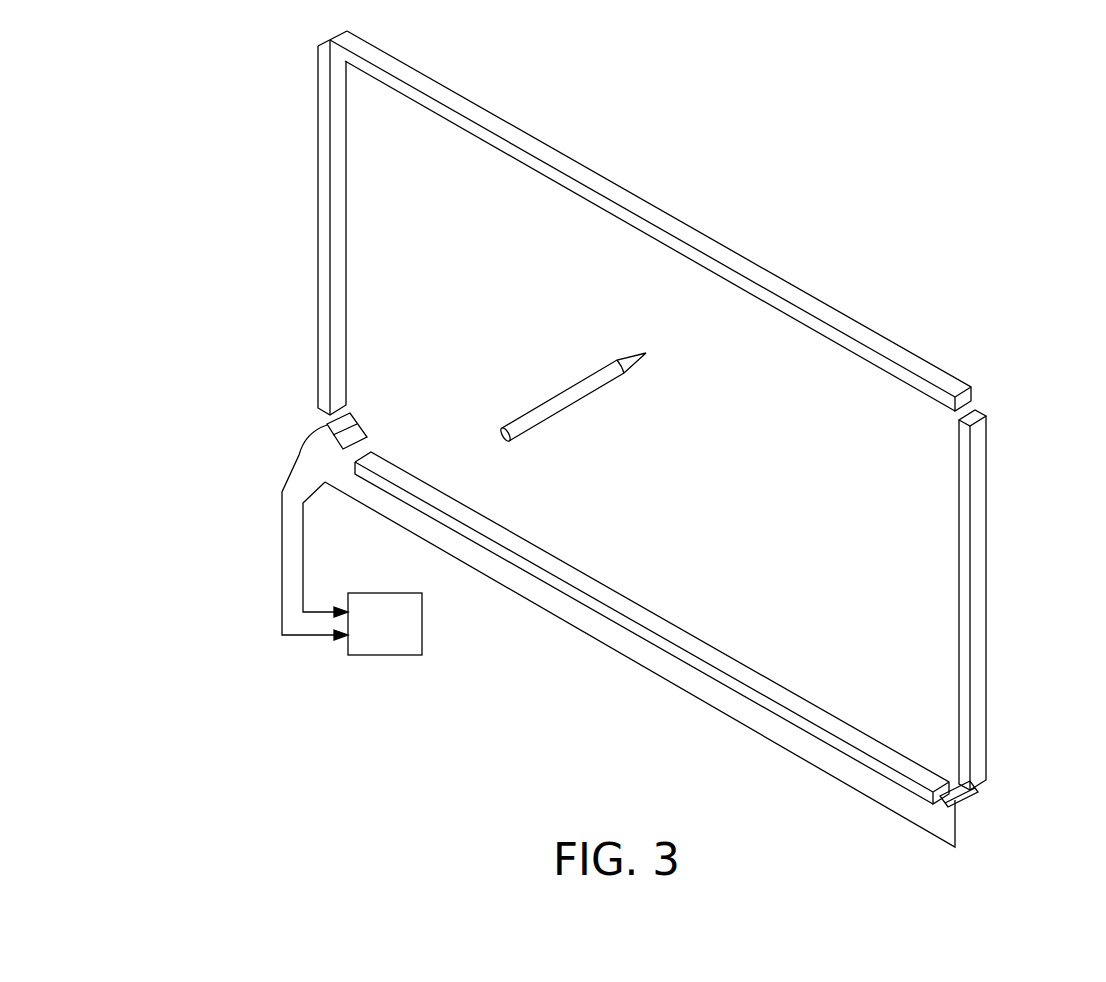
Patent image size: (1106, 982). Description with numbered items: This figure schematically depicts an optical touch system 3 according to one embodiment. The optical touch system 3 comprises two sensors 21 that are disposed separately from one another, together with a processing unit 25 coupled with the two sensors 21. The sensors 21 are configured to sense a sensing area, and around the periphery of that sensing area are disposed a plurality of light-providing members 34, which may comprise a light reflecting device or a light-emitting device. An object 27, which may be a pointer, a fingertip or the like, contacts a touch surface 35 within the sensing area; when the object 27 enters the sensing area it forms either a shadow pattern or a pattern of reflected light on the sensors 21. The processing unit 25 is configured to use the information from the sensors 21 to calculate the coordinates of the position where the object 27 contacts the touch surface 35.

The optical touch system 3 is at (250, 104).
The sensor 21 is at (327, 428).
The processing unit 25 is at (384, 656).
The object 27 is at (568, 407).
The light-providing member 34 is at (318, 229).
The touch surface 35 is at (928, 594).